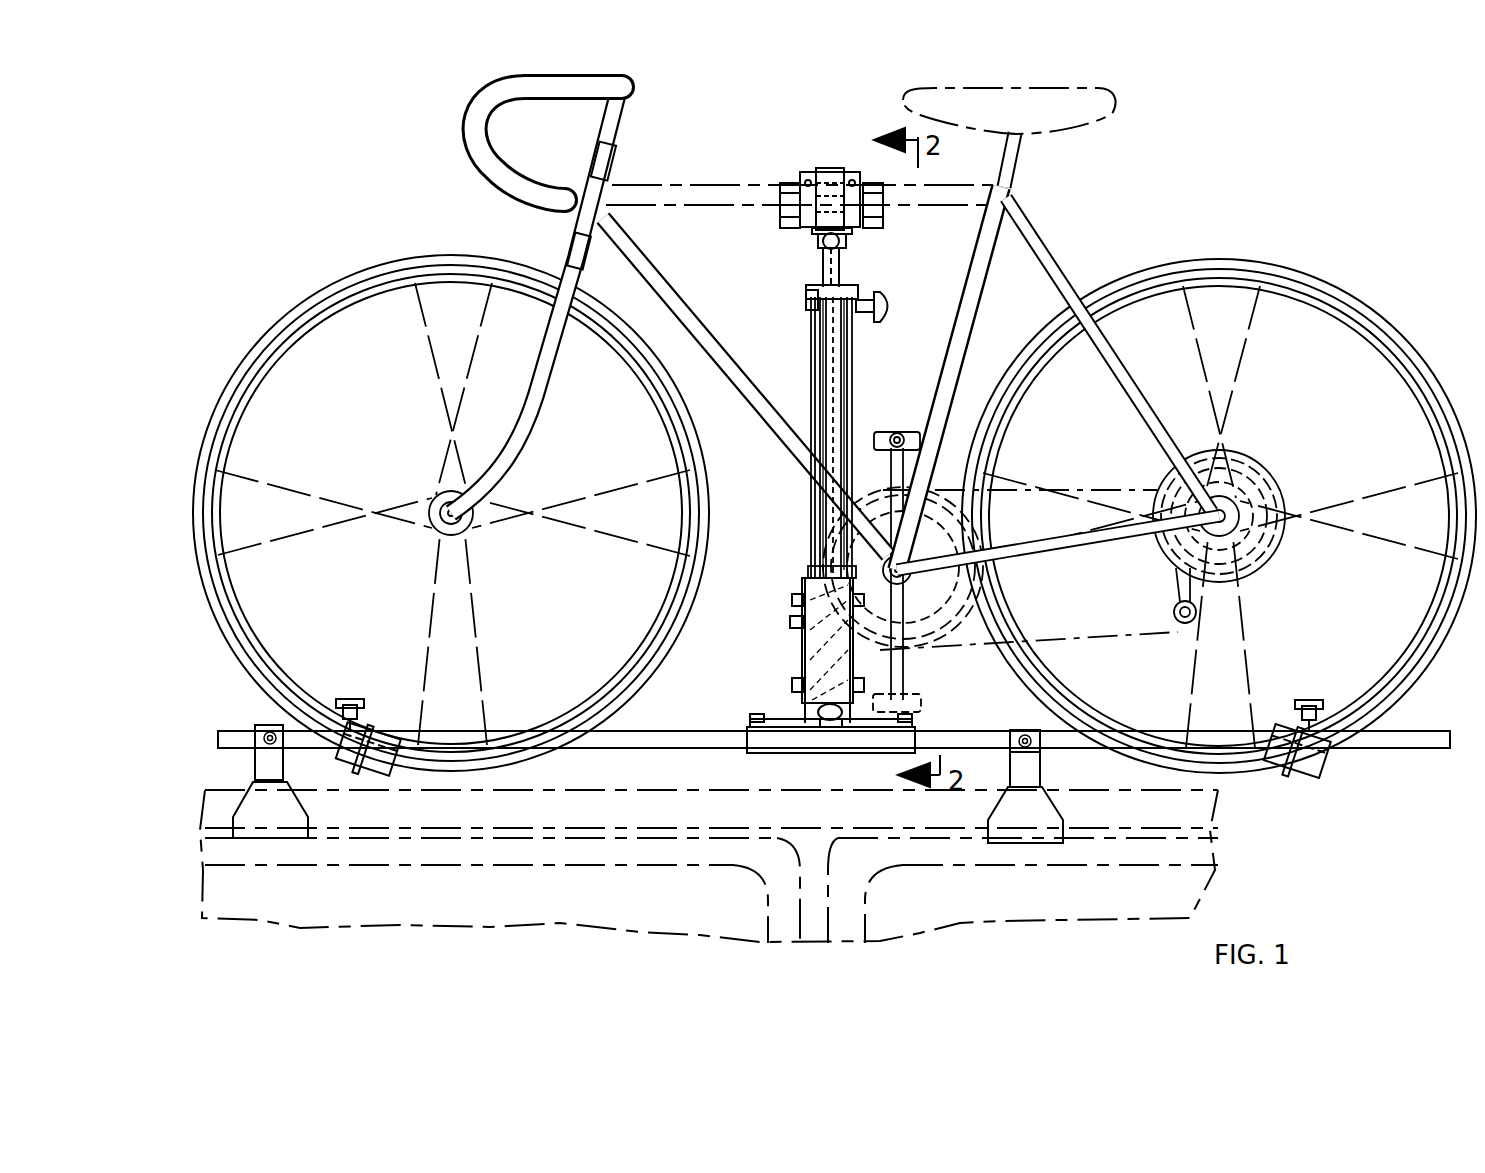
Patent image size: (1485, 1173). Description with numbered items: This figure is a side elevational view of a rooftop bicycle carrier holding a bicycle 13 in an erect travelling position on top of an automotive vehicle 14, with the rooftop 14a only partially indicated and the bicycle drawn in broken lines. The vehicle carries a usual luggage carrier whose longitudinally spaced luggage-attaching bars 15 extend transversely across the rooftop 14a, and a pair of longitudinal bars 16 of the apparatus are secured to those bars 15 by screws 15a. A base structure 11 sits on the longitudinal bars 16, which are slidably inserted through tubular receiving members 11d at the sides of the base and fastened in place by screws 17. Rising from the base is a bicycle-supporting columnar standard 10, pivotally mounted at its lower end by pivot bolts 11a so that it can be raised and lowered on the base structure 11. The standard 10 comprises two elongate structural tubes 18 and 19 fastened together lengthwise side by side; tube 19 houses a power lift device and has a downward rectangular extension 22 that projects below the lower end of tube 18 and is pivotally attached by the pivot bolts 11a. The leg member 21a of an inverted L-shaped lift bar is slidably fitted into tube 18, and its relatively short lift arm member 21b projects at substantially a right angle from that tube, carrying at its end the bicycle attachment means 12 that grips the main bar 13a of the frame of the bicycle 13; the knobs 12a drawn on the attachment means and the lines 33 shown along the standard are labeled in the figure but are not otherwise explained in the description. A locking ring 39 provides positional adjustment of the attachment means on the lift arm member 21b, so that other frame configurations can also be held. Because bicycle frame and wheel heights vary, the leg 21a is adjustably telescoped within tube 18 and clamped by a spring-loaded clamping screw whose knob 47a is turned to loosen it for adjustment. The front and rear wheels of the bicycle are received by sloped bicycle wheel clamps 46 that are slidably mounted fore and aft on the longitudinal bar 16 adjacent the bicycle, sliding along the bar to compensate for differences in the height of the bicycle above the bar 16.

The columnar standard 10 is at (866, 388).
The base structure 11 is at (787, 720).
The pivot bolts 11a is at (800, 680).
The tubular receiving members 11d is at (790, 742).
The bicycle attachment means 12 is at (828, 160).
The clamp knobs 12a is at (790, 183).
The bicycle 13 is at (834, 429).
The main bar 13a is at (668, 190).
The automotive vehicle 14 is at (1225, 855).
The rooftop 14a is at (650, 805).
The luggage-attaching bars 15 is at (265, 765).
The screws 15a is at (268, 726).
The longitudinal bars 16 is at (975, 735).
The screws 17 is at (752, 720).
The structural tube 18 is at (830, 357).
The structural tube 19 is at (848, 288).
The leg member 21a is at (823, 270).
The lift arm member 21b is at (820, 248).
The rectangular extension 22 is at (825, 638).
The post guide slots 33 is at (856, 406).
The locking ring 39 is at (845, 248).
The bicycle wheel clamps 46 is at (355, 750).
The knob 47a is at (885, 310).